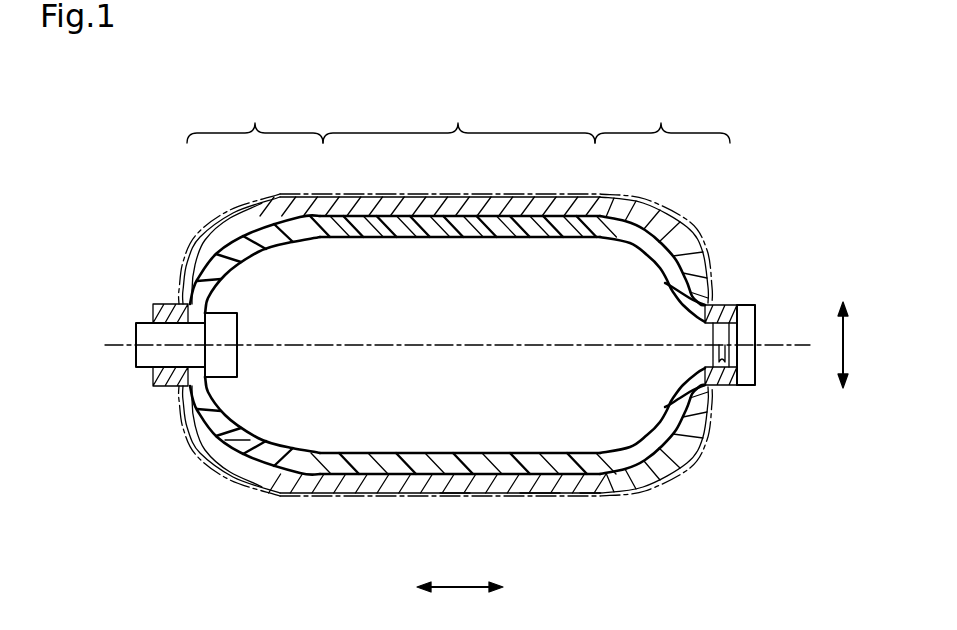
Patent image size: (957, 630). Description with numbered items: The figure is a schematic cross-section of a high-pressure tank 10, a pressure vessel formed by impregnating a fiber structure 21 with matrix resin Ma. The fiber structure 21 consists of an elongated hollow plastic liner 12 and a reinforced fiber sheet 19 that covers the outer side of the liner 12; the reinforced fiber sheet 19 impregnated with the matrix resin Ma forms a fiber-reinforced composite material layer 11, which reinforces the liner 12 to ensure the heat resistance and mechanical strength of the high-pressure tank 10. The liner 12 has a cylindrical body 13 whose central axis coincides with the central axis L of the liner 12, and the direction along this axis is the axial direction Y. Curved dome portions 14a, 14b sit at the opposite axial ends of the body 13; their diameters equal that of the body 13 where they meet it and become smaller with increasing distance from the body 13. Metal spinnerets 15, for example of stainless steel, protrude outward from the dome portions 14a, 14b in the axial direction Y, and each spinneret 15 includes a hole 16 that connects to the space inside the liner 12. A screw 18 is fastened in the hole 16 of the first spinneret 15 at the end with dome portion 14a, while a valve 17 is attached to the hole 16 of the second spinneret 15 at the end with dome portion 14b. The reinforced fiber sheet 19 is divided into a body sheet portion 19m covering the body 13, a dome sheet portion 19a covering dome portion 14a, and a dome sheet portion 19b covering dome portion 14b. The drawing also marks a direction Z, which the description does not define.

The high-pressure tank 10 is at (762, 186).
The fiber-reinforced composite material layer 11 is at (668, 458).
The liner 12 is at (665, 267).
The body 13 is at (458, 292).
The dome portion 14a is at (654, 292).
The dome portion 14b is at (251, 292).
The spinneret 15 is at (170, 303).
The hole 16 is at (170, 380).
The valve 17 is at (140, 352).
The screw 18 is at (757, 368).
The reinforced fiber sheet 19 is at (590, 488).
The dome sheet portion 19a is at (668, 470).
The dome sheet portion 19b is at (237, 447).
The body sheet portion 19m is at (455, 488).
The fiber structure 21 is at (536, 512).
The matrix resin Ma is at (225, 490).
The central axis L is at (783, 343).
The axial direction Y is at (460, 585).
The radial direction Z is at (845, 333).